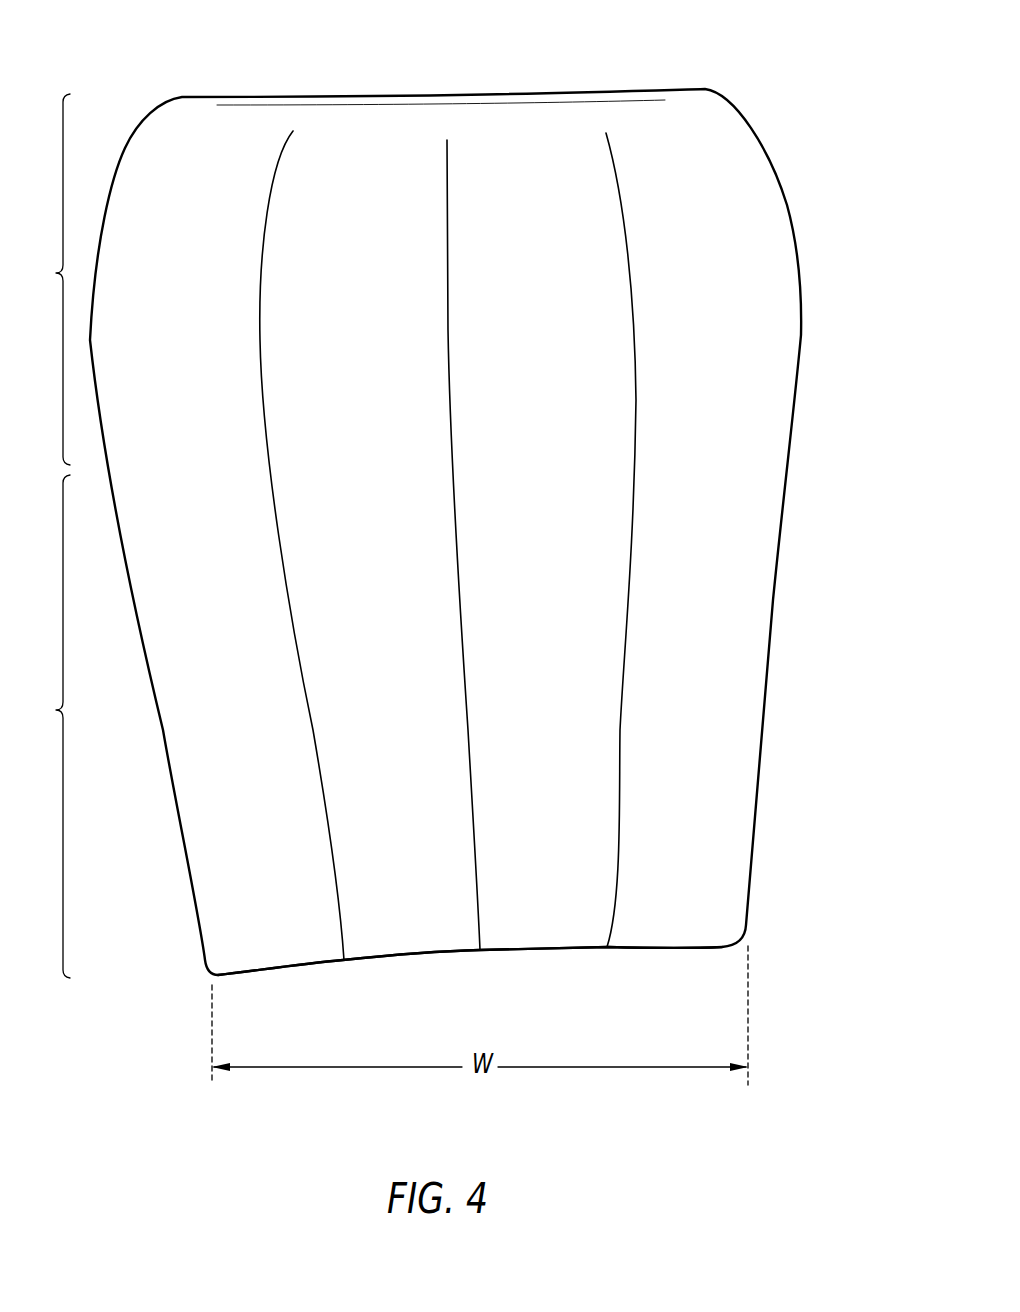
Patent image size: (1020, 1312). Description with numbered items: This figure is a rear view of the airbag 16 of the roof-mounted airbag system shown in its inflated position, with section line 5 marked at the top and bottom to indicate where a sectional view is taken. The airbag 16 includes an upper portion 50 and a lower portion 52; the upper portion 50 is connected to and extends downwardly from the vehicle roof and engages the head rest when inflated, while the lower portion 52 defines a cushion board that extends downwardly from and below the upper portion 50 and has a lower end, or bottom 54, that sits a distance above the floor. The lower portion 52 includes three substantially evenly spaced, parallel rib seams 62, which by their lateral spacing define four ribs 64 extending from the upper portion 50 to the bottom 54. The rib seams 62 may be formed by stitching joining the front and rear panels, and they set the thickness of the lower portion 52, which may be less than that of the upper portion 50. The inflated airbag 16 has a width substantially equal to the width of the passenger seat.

The airbag 16 is at (782, 197).
The upper portion 50 is at (49, 279).
The lower portion 52 is at (49, 726).
The bottom 54 is at (516, 953).
The rib seams 62 is at (622, 678).
The ribs 64 is at (670, 865).
The section line 5- 5 is at (625, 22).